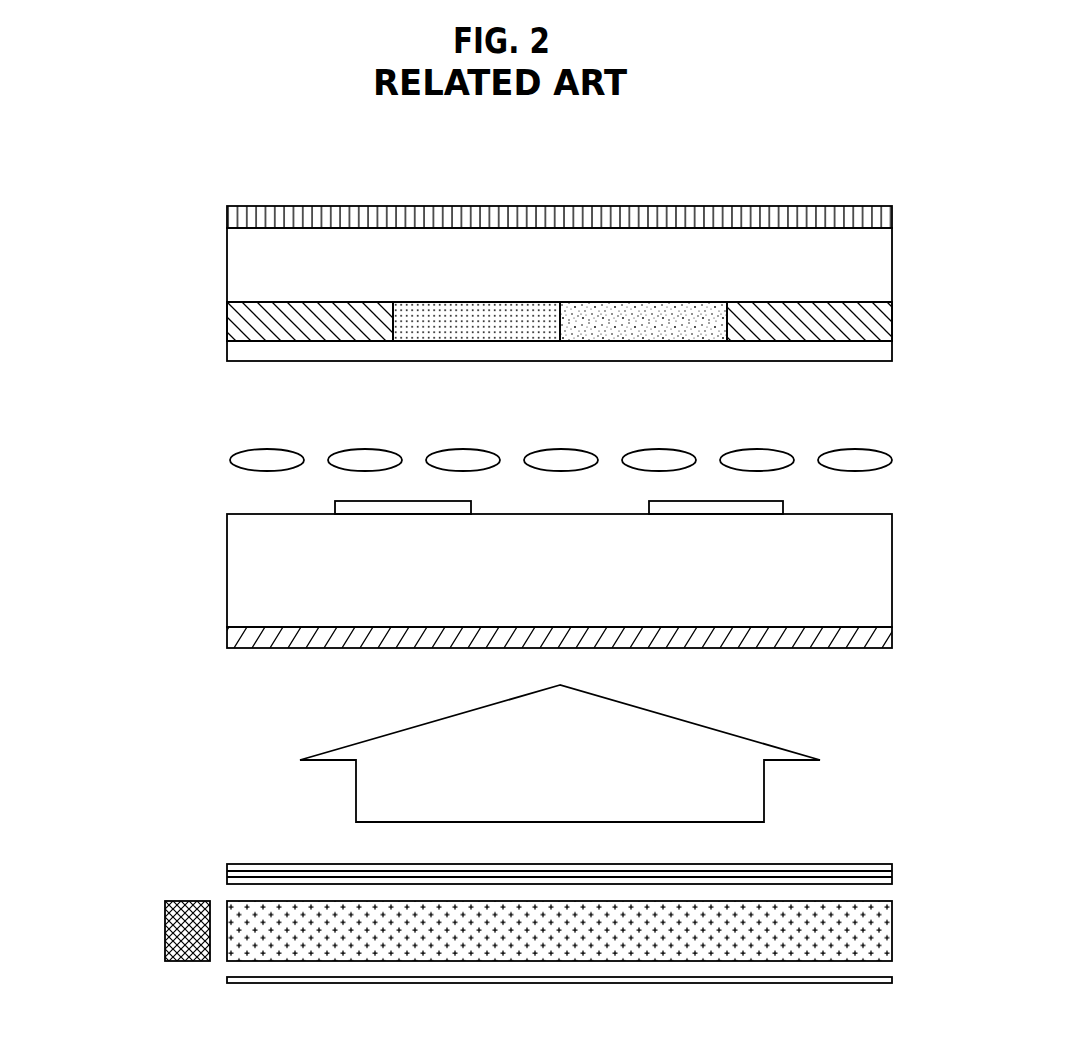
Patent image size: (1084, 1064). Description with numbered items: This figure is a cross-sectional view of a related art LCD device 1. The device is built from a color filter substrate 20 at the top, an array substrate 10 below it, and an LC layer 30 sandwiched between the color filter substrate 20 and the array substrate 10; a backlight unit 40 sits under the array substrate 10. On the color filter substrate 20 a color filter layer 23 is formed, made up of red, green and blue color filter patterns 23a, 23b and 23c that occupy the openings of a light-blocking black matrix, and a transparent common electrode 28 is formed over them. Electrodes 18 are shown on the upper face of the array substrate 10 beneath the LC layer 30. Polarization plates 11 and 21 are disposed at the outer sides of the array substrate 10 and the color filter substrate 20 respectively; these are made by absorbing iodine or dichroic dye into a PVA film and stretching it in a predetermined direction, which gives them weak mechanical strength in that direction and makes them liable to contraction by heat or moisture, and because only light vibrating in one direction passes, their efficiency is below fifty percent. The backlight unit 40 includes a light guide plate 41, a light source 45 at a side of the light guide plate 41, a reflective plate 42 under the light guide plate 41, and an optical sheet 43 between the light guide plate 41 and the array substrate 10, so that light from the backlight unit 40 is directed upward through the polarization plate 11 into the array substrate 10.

The LCD device 1 is at (578, 153).
The array substrate 10 is at (886, 584).
The polarization plate 11 is at (886, 639).
The pixel electrode 18 is at (776, 508).
The color filter substrate 20 is at (882, 257).
The polarization plate 21 is at (885, 216).
The color filter layer 23 is at (594, 354).
The red color filter pattern 23a is at (303, 341).
The green color filter pattern 23b is at (476, 341).
The blue color filter pattern 23c is at (655, 341).
The common electrode 28 is at (883, 353).
The LC layer 30 is at (890, 460).
The backlight unit 40 is at (90, 880).
The light guide plate 41 is at (253, 955).
The reflective plate 42 is at (250, 980).
The optical sheet 43 is at (227, 872).
The light source 45 is at (165, 935).